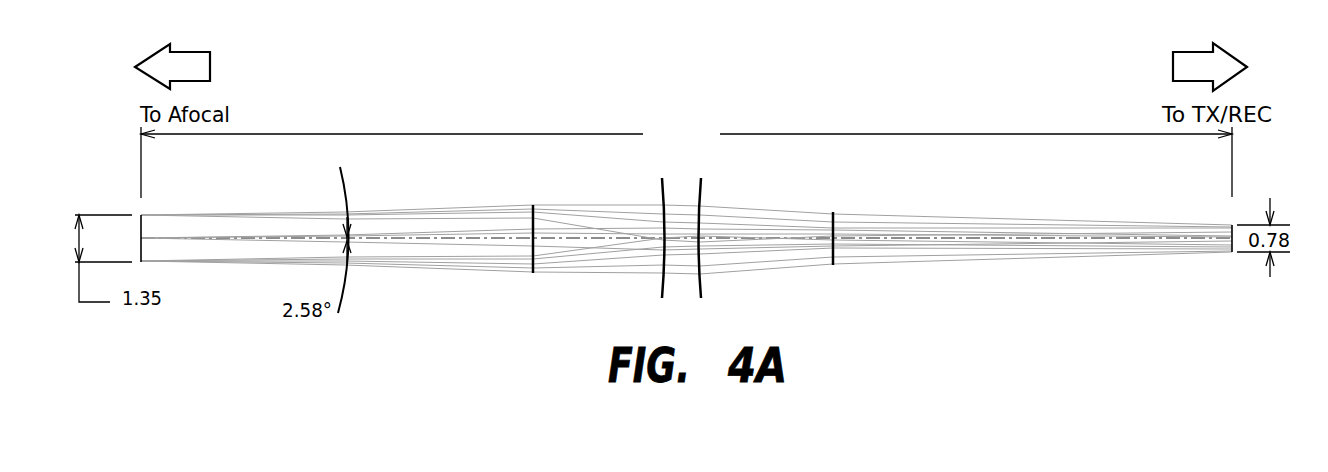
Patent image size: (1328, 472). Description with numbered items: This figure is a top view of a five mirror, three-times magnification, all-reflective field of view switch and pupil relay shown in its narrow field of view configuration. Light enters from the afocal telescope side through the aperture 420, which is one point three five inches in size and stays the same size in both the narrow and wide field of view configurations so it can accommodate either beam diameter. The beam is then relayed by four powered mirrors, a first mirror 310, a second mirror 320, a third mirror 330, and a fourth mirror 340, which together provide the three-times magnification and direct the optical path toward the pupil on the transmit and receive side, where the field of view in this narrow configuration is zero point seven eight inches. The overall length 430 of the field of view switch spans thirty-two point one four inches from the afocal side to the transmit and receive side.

The first mirror 310 is at (662, 187).
The second mirror 320 is at (533, 256).
The third mirror 330 is at (834, 217).
The fourth mirror 340 is at (702, 190).
The aperture 420 is at (141, 237).
The length 430 is at (712, 118).